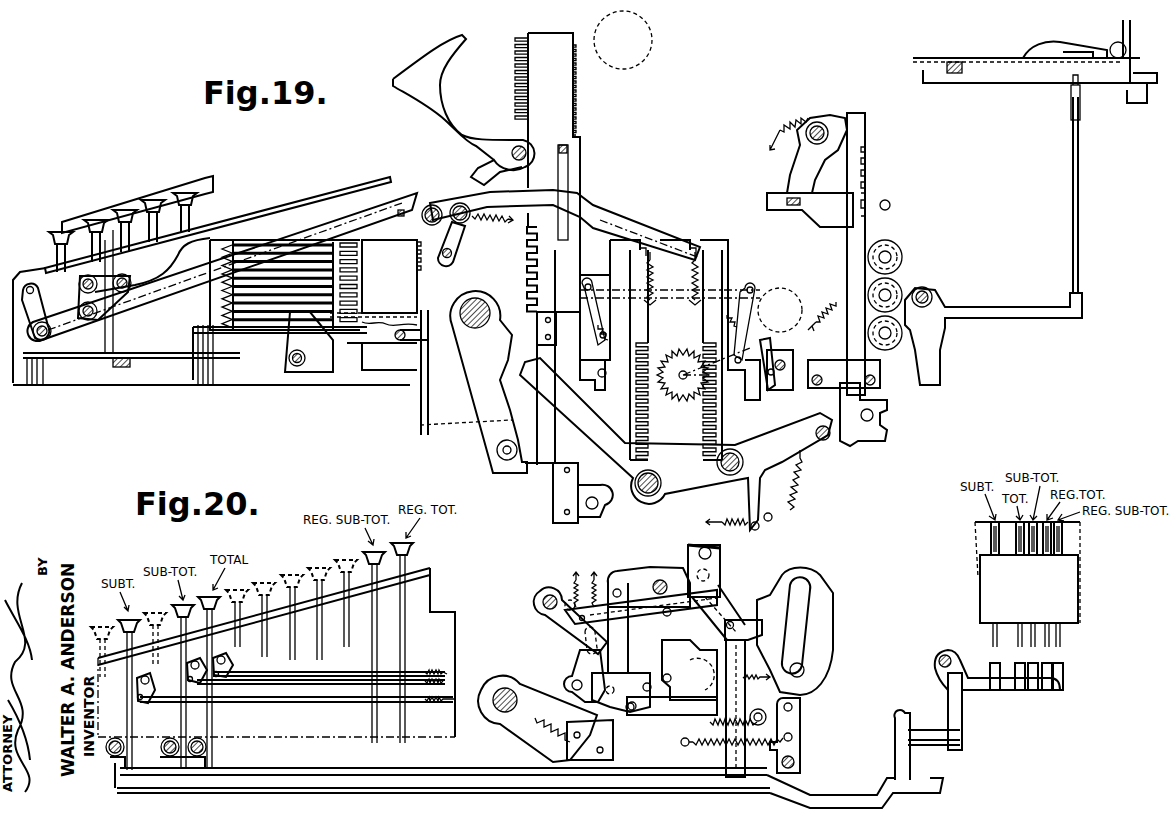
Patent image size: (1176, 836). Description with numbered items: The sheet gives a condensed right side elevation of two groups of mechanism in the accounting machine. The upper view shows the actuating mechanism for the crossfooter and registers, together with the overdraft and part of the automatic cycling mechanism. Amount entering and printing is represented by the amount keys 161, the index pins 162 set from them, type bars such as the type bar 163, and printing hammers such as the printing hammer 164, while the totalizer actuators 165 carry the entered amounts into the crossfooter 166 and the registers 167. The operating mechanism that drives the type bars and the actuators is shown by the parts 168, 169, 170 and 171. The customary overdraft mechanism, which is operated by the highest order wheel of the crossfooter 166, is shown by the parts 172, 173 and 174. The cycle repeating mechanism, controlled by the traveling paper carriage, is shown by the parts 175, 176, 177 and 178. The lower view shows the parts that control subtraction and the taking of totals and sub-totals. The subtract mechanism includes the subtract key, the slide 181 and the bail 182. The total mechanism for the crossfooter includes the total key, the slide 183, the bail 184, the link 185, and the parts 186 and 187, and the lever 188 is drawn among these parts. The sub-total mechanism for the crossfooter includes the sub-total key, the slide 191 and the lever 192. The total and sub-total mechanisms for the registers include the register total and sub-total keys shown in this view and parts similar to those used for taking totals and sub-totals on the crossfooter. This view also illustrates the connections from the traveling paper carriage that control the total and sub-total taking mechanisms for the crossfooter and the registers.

In FIG. 19, the amount keys 161 is at (152, 210).
In FIG. 19, the index pins 162 is at (422, 277).
In FIG. 19, the type bars 163 is at (577, 152).
In FIG. 19, the printing hammers 164 is at (453, 115).
In FIG. 19, the totalizer actuators 165 is at (705, 428).
In FIG. 19, the crossfooter 166 is at (672, 396).
In FIG. 19, the registers 167 is at (895, 330).
In FIG. 19, the operating mechanism part 168 is at (688, 502).
In FIG. 19, the operating mechanism part 169 is at (838, 437).
In FIG. 19, the operating mechanism part 170 is at (638, 467).
In FIG. 19, the operating mechanism part 171 is at (475, 387).
In FIG. 19, the overdraft mechanism part 172 is at (730, 293).
In FIG. 19, the overdraft mechanism part 173 is at (768, 390).
In FIG. 19, the overdraft mechanism part 174 is at (793, 387).
In FIG. 19, the cycle repeating mechanism part 175 is at (1080, 188).
In FIG. 19, the cycle repeating mechanism part 176 is at (983, 307).
In FIG. 19, the cycle repeating mechanism part 177 is at (597, 212).
In FIG. 19, the cycle repeating mechanism part 178 is at (63, 324).
In FIG. 20, the slide 181 is at (125, 778).
In FIG. 20, the bail 182 is at (721, 562).
In FIG. 20, the slide 183 is at (710, 758).
In FIG. 20, the bail 184 is at (798, 722).
In FIG. 20, the link 185 is at (673, 712).
In FIG. 20, the total mechanism part 186 is at (625, 655).
In FIG. 20, the total mechanism part 187 is at (588, 662).
In FIG. 20, the lever 188 is at (560, 627).
In FIG. 20, the slide 191 is at (693, 787).
In FIG. 20, the lever 192 is at (653, 620).